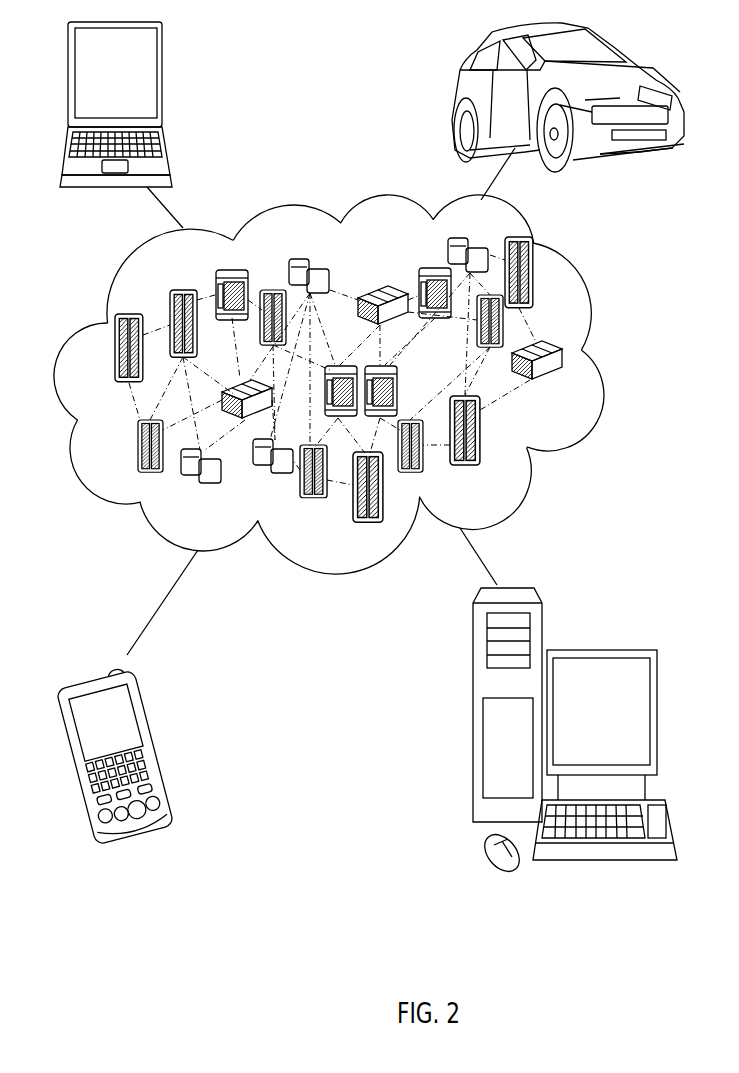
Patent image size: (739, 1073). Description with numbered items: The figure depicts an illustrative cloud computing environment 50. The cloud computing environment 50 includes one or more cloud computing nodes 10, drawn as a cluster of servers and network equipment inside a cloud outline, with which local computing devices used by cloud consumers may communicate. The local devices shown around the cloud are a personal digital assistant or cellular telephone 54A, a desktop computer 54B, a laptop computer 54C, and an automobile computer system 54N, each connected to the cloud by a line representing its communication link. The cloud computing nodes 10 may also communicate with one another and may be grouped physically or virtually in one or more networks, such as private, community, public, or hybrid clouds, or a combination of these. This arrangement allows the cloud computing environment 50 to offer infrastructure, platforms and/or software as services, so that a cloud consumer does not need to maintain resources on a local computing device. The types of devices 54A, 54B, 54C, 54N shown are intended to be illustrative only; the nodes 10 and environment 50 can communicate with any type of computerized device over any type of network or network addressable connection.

The cloud computing environment 50 is at (347, 384).
The cloud computing node 10 is at (569, 389).
The personal digital assistant or cellular telephone 54A is at (155, 742).
The desktop computer 54B is at (600, 647).
The laptop computer 54C is at (165, 78).
The automobile computer system 54N is at (455, 100).